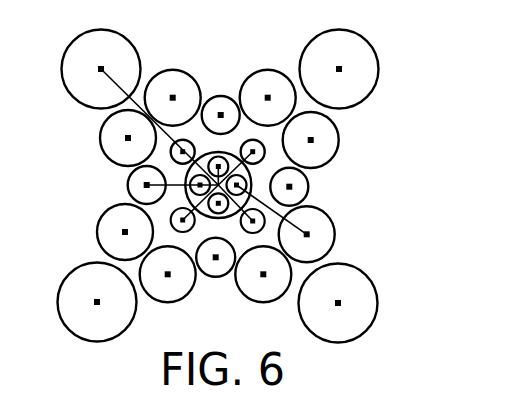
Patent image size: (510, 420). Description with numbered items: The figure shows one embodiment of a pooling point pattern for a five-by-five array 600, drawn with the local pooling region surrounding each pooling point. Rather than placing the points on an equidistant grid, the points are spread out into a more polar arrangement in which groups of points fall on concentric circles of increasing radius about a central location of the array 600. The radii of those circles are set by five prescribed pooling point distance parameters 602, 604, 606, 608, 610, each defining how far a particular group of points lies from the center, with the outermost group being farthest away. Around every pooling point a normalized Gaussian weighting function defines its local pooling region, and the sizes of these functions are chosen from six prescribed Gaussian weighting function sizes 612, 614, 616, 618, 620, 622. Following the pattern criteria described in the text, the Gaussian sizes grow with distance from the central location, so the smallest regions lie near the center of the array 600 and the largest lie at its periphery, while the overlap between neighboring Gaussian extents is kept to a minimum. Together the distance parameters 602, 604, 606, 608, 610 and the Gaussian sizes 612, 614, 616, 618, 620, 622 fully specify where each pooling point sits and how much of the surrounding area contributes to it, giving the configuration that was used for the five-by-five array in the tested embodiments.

The 5×5 array 600 is at (392, 134).
The pooling point distance parameter 602 is at (187, 173).
The pooling point distance parameter 604 is at (247, 181).
The pooling point distance parameter 606 is at (160, 187).
The pooling point distance parameter 608 is at (295, 226).
The pooling point distance parameter 610 is at (115, 78).
The Gaussian weighting function size 612 is at (170, 219).
The Gaussian weighting function size 614 is at (240, 221).
The Gaussian weighting function size 616 is at (303, 256).
The Gaussian weighting function size 618 is at (206, 276).
The Gaussian weighting function size 620 is at (194, 78).
The Gaussian weighting function size 622 is at (313, 38).